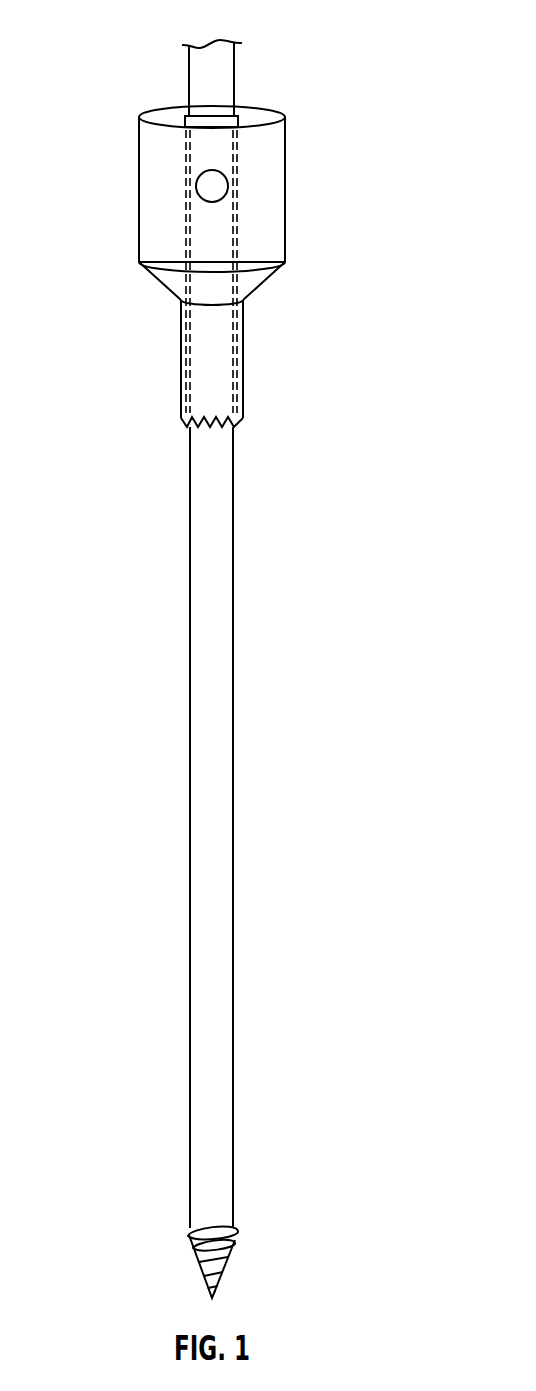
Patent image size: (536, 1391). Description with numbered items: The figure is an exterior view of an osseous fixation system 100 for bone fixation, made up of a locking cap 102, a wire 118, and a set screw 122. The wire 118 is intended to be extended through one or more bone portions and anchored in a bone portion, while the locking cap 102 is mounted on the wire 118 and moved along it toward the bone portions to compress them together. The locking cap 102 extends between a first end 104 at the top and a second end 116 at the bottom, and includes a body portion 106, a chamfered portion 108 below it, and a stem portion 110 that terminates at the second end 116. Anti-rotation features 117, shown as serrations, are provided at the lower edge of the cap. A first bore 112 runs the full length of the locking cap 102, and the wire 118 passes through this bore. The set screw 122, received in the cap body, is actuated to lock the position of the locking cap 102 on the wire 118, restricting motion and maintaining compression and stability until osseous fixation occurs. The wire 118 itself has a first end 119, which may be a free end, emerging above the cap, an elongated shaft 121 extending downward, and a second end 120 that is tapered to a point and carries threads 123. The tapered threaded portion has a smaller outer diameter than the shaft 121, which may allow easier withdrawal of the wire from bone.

The osseous fixation system 100 is at (343, 41).
The locking cap 102 is at (270, 160).
The first end 104 is at (257, 112).
The body portion 106 is at (273, 240).
The chamfered portion 108 is at (253, 278).
The stem portion 110 is at (223, 375).
The first bore 112 is at (187, 157).
The second end 116 is at (242, 398).
The anti-rotation features 117 is at (228, 420).
The wire 118 is at (188, 592).
The first end 119 is at (188, 80).
The second end 120 is at (234, 1238).
The shaft 121 is at (217, 723).
The set screw 122 is at (212, 190).
The threads 123 is at (197, 1250).